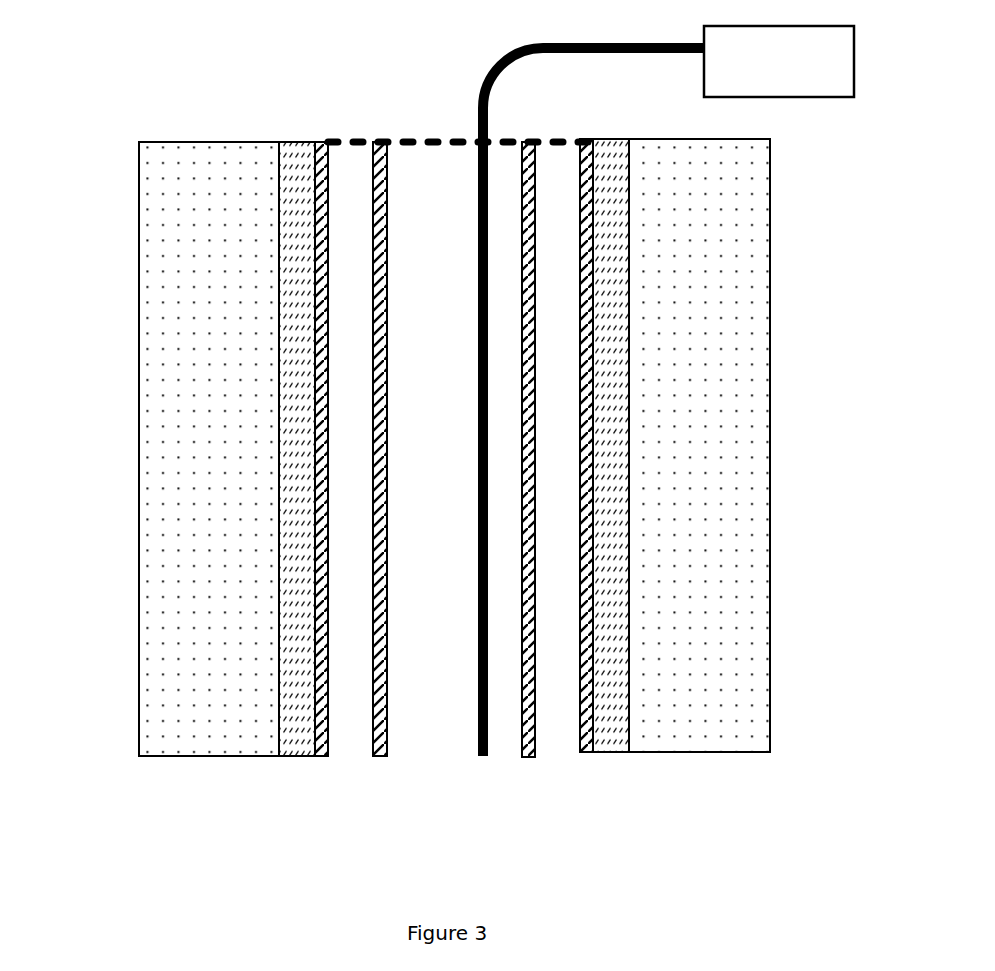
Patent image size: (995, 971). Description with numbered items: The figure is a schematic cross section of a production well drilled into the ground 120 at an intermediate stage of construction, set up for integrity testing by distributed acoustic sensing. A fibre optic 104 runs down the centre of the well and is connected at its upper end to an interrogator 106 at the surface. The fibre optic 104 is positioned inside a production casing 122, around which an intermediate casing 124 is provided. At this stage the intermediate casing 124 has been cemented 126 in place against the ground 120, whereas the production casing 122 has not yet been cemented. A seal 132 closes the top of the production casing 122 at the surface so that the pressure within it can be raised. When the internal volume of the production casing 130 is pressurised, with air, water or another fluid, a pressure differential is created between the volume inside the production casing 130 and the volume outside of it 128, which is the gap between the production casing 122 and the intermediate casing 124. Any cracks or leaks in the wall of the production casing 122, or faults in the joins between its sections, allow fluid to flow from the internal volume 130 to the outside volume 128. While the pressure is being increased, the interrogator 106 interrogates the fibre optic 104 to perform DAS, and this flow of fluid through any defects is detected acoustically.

The fibre optic 104 is at (502, 72).
The interrogator 106 is at (767, 72).
The ground 120 is at (735, 668).
The production casing 122 is at (525, 757).
The intermediate casing 124 is at (318, 756).
The cement 126 is at (603, 752).
The volume outside the production casing 128 is at (345, 200).
The internal volume of the production casing 130 is at (418, 343).
The seal 132 is at (357, 143).